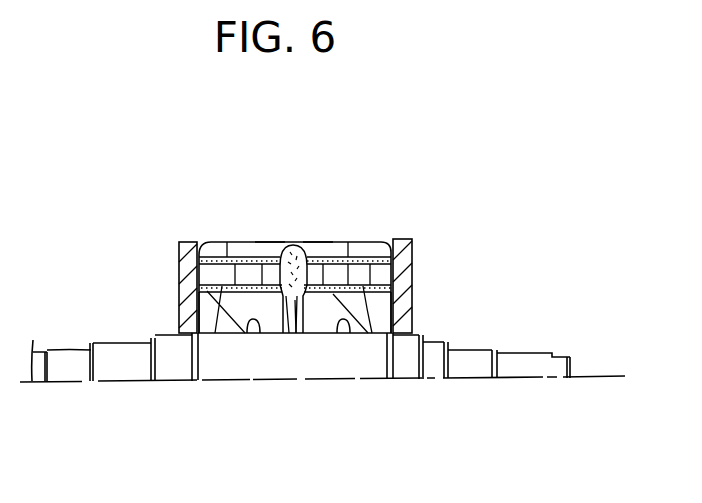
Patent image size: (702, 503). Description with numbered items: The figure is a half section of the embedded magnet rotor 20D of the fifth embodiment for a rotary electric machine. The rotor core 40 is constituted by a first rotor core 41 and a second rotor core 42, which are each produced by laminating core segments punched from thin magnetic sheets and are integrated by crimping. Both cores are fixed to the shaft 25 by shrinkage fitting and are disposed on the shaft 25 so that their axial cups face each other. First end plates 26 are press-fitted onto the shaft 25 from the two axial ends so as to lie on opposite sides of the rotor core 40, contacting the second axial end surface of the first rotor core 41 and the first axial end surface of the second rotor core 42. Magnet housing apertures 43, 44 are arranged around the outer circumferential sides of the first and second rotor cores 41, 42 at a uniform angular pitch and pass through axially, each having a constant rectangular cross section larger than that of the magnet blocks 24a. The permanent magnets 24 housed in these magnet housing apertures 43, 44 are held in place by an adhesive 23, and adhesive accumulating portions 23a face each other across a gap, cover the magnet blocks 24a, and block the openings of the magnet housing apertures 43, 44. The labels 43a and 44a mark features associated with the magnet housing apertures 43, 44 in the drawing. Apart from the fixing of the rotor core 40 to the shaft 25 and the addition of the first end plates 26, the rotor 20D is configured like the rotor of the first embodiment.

The rotor 20D is at (95, 129).
The adhesive 23 is at (255, 258).
The permanent magnets 24 is at (378, 265).
The magnet blocks 24a is at (373, 333).
The shaft 25 is at (514, 358).
The first end plates 26 is at (187, 298).
The rotor core 40 is at (255, 154).
The first rotor core 41 is at (270, 242).
The second rotor core 42 is at (318, 241).
The magnet housing apertures 43 is at (232, 268).
The first electrode pad 43a is at (248, 333).
The magnet housing apertures 44 is at (366, 245).
The second electrode pad 44a is at (338, 333).
The adhesive accumulating portions 23a is at (296, 333).